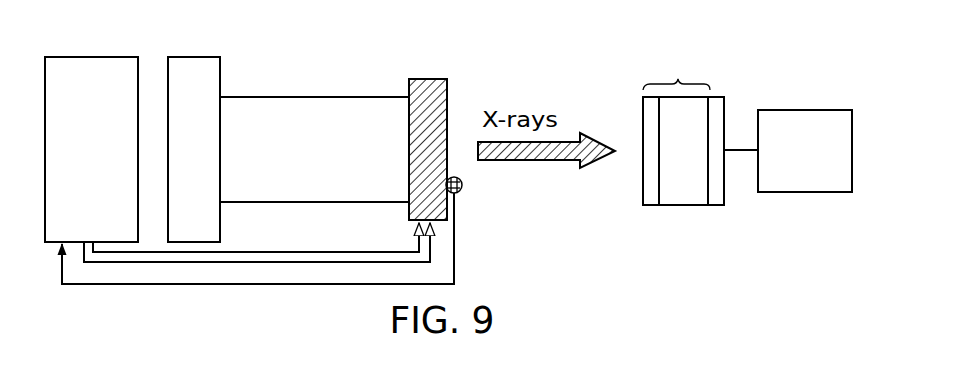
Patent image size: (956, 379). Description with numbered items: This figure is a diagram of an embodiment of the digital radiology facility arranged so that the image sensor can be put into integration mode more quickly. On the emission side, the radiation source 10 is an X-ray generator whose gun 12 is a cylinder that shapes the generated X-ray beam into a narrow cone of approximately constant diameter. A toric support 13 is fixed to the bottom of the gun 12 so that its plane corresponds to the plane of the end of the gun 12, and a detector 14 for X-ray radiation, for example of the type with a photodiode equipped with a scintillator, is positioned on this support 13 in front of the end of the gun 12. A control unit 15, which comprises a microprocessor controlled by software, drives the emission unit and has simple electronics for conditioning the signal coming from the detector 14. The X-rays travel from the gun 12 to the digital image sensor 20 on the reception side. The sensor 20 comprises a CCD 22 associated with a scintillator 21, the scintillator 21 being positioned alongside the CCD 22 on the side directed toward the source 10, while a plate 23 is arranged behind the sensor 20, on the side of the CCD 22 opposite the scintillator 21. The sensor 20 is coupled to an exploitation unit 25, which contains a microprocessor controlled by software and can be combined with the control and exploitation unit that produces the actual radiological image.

The radiation source 10 is at (196, 57).
The gun 12 is at (318, 137).
The toric support 13 is at (422, 79).
The detector 14 is at (460, 194).
The control unit 15 is at (113, 115).
The digital image sensor 20 is at (692, 71).
The scintillator 21 is at (675, 205).
The CCD 22 is at (650, 205).
The plate 23 is at (716, 97).
The exploitation unit 25 is at (803, 178).